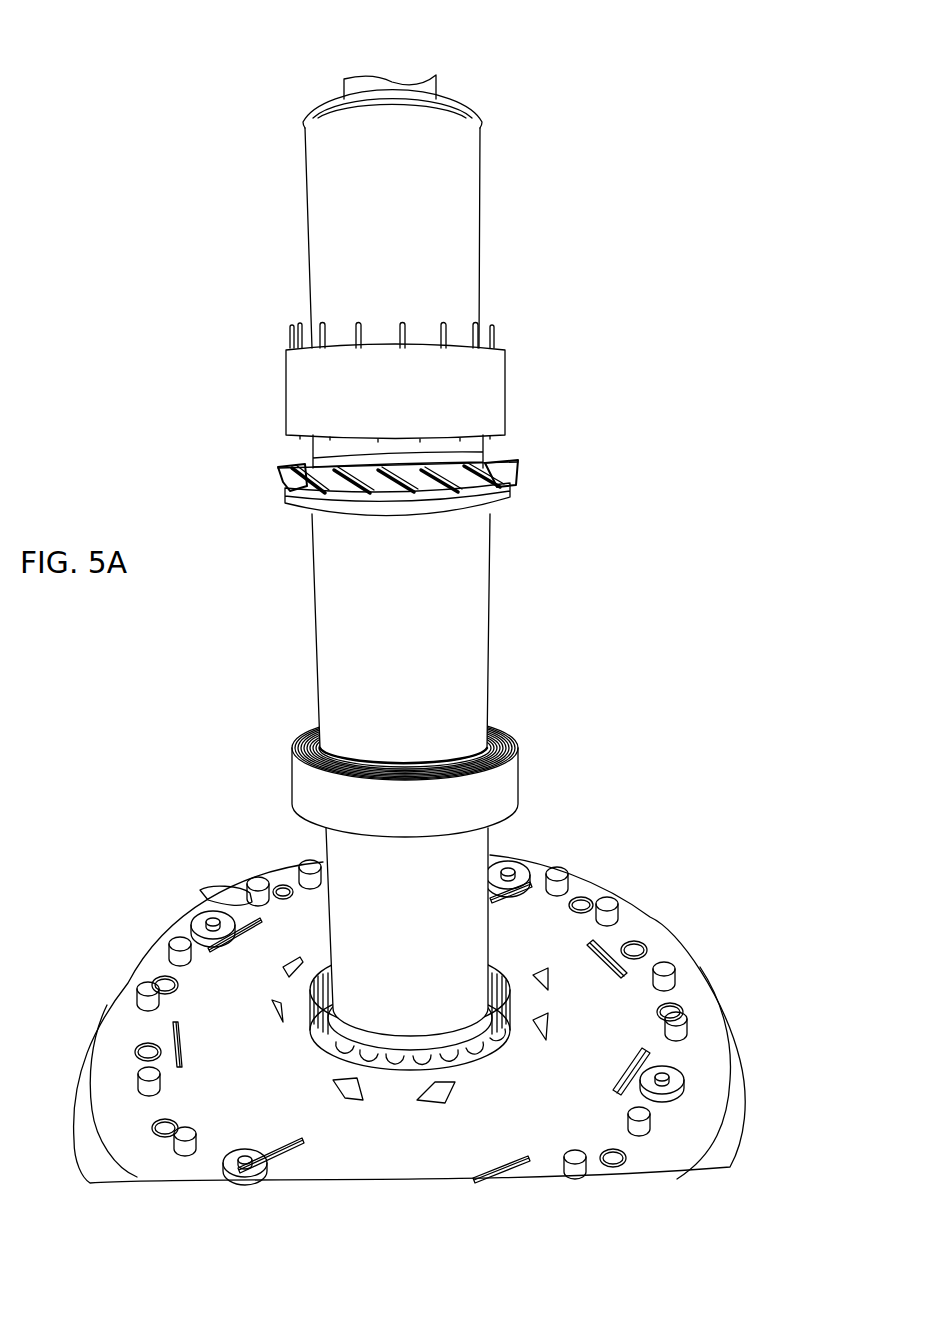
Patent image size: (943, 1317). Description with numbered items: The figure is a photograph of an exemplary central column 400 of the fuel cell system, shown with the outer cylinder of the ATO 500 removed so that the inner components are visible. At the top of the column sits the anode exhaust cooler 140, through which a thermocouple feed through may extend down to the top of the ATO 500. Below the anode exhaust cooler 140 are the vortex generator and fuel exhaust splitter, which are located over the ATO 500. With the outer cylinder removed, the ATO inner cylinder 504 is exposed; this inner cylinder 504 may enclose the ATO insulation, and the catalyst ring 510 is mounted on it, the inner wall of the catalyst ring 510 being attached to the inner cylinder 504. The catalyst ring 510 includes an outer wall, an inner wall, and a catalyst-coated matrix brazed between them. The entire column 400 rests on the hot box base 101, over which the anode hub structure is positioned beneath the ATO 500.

The hot box base 101 is at (652, 934).
The anode exhaust cooler 140 is at (490, 195).
The central column 400 is at (508, 70).
The ATO 500 is at (253, 535).
The ATO inner cylinder 504 is at (469, 616).
The catalyst ring 510 is at (529, 736).